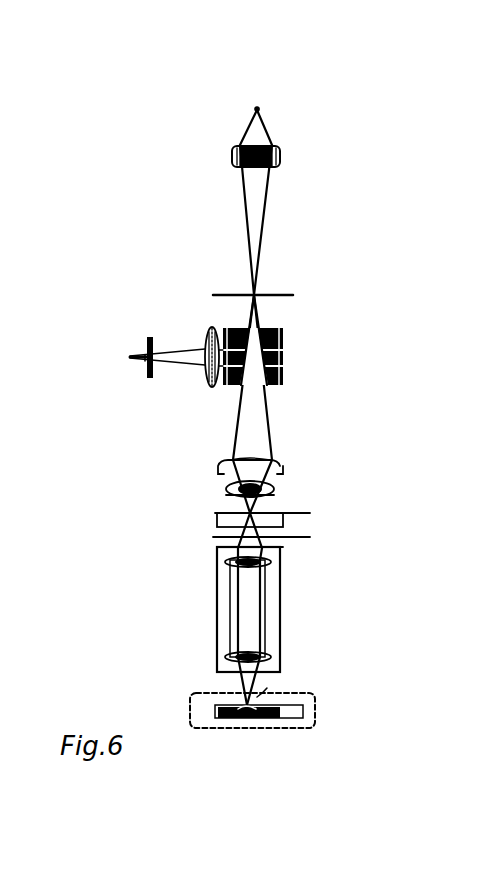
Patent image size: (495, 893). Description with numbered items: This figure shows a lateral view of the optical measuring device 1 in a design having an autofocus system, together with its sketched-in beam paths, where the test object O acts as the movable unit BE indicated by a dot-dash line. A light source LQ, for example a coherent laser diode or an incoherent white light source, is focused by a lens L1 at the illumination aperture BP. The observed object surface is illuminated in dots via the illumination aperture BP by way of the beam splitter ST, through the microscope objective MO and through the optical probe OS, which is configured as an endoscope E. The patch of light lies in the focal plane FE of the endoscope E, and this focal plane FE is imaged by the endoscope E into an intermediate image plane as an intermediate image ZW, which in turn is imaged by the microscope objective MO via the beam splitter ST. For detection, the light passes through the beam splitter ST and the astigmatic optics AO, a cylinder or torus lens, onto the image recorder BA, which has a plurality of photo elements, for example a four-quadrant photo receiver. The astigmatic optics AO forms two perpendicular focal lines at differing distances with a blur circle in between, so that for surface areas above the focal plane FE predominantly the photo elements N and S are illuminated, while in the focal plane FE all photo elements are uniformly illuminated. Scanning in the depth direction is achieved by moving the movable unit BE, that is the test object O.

The light source LQ is at (275, 102).
The lens L1 is at (287, 157).
The illumination aperture BP is at (300, 292).
The beam splitter ST is at (291, 358).
The astigmatic optics AO is at (205, 331).
The photo element N is at (143, 333).
The photo element S is at (155, 377).
The image recorder BA is at (127, 372).
The microscope objective MO is at (293, 478).
The intermediate image ZW is at (318, 520).
The optical probe OS is at (330, 569).
The endoscope E is at (280, 607).
The optical measuring device 1 is at (147, 563).
The focal plane FE is at (277, 685).
The movable unit BE is at (317, 705).
The test object O is at (210, 713).